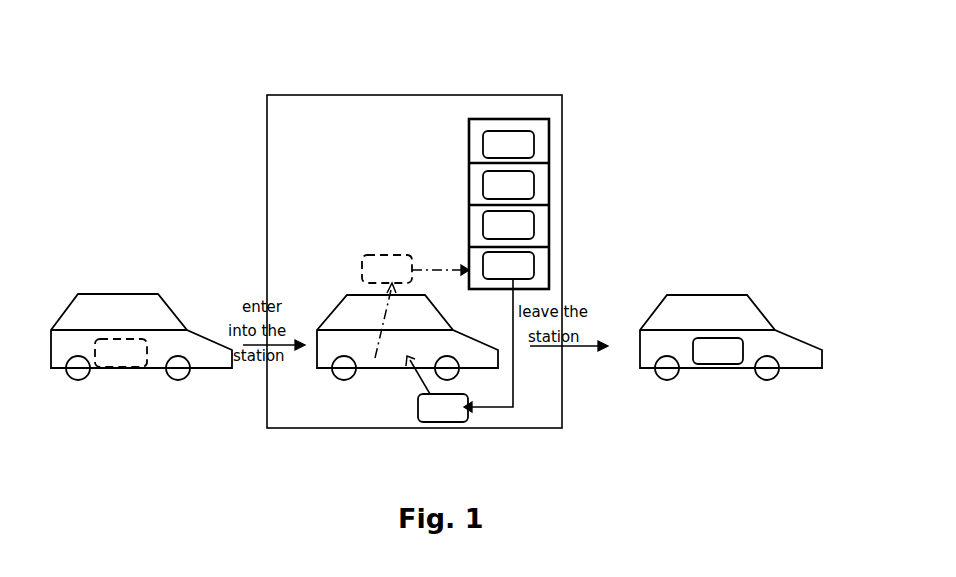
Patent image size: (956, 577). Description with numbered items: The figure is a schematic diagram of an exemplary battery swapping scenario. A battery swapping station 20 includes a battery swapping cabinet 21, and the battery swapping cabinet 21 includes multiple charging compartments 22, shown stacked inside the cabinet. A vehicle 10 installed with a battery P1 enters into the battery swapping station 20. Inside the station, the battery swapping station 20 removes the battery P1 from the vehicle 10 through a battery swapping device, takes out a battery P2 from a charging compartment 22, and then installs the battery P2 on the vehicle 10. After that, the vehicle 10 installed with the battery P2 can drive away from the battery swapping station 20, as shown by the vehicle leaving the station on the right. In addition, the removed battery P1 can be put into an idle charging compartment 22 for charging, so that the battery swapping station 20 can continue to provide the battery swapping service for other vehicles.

The vehicle 10 is at (158, 294).
The battery swapping station 20 is at (465, 95).
The battery swapping cabinet 21 is at (510, 118).
The charging compartment 22 is at (544, 145).
The battery P1 is at (120, 370).
The battery P2 is at (457, 422).